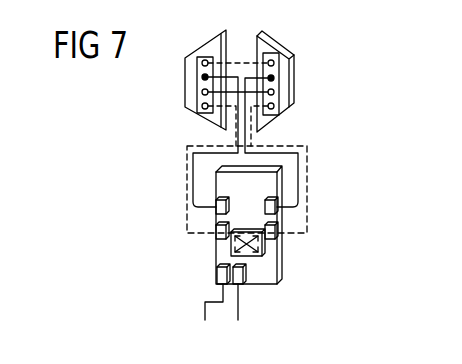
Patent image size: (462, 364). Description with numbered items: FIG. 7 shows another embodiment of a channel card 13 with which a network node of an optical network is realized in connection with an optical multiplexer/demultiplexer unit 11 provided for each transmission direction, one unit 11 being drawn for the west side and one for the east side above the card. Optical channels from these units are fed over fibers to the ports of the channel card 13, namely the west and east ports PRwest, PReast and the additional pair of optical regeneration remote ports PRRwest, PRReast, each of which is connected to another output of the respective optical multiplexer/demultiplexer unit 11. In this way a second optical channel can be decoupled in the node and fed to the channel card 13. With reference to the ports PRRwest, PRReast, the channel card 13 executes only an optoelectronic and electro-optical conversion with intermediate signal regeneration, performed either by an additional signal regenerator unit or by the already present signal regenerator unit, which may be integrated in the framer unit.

The optical multiplexer/demultiplexer unit 11 is at (185, 82).
The channel card 13 is at (282, 273).
The optical regeneration remote port PRRwest is at (216, 207).
The optical regeneration remote port PRReast is at (277, 207).
The optical receive port PRwest is at (216, 233).
The optical receive port PReast is at (277, 233).